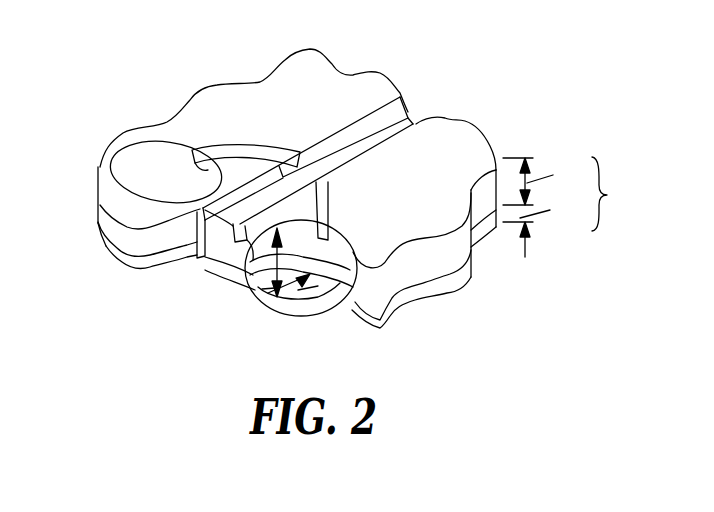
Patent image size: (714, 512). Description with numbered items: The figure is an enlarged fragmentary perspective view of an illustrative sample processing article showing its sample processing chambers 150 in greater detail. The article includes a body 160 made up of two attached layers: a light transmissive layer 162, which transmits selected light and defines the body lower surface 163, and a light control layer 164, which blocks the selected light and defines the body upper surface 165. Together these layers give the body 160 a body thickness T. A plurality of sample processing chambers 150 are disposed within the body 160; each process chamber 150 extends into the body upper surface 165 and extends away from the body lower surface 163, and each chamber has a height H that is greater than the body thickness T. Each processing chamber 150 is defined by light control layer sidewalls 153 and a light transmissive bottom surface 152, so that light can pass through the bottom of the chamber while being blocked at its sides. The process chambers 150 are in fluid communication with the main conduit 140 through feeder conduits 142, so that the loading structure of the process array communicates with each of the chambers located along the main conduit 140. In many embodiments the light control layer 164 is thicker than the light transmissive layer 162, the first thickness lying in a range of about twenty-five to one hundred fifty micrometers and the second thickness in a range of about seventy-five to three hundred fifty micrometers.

The body 160 is at (250, 53).
The body upper surface 165 is at (460, 140).
The light control layer 164 is at (455, 257).
The light transmissive layer 162 is at (433, 292).
The body lower surface 163 is at (391, 318).
The main conduit 140 is at (410, 120).
The feeder conduit 142 is at (228, 150).
The sample processing chamber 150 is at (146, 172).
The light transmissive bottom surface 152 is at (177, 202).
The light control layer sidewalls 153 is at (330, 258).
The height H is at (252, 270).
The body thickness T is at (566, 206).